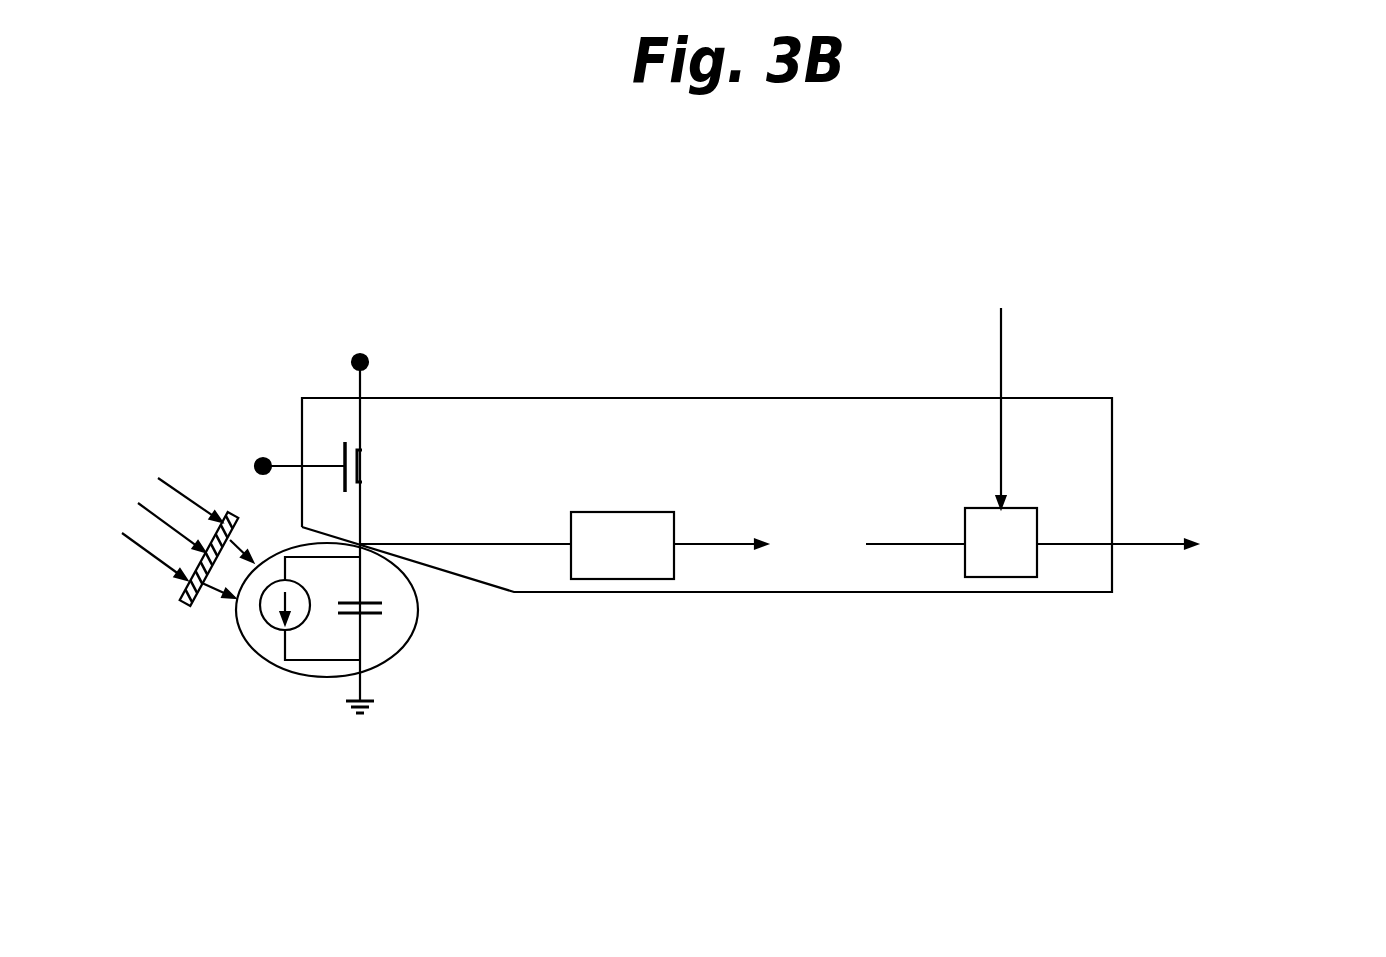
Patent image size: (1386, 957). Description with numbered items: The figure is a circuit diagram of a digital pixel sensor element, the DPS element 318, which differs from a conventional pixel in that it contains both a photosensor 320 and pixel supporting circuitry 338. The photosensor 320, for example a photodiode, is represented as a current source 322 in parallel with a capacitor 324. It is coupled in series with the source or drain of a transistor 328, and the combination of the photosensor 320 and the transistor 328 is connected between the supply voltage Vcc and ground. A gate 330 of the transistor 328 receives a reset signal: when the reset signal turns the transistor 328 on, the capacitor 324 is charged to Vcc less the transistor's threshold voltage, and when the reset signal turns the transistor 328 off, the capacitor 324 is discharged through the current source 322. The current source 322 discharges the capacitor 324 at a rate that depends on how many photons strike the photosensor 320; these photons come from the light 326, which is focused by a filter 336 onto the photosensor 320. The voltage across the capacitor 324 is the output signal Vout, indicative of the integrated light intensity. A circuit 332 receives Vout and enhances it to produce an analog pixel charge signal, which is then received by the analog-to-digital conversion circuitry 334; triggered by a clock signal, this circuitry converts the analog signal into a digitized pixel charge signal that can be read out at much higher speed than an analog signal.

The DPS element 318 is at (618, 267).
The photosensor 320 is at (385, 651).
The current source 322 is at (267, 640).
The capacitor 324 is at (385, 610).
The light 326 is at (158, 478).
The transistor 328 is at (380, 467).
The gate 330 is at (263, 466).
The circuit 332 is at (623, 524).
The analog-to-digital conversion circuitry 334 is at (1018, 508).
The filter 336 is at (185, 603).
The pixel supporting circuitry 338 is at (815, 398).